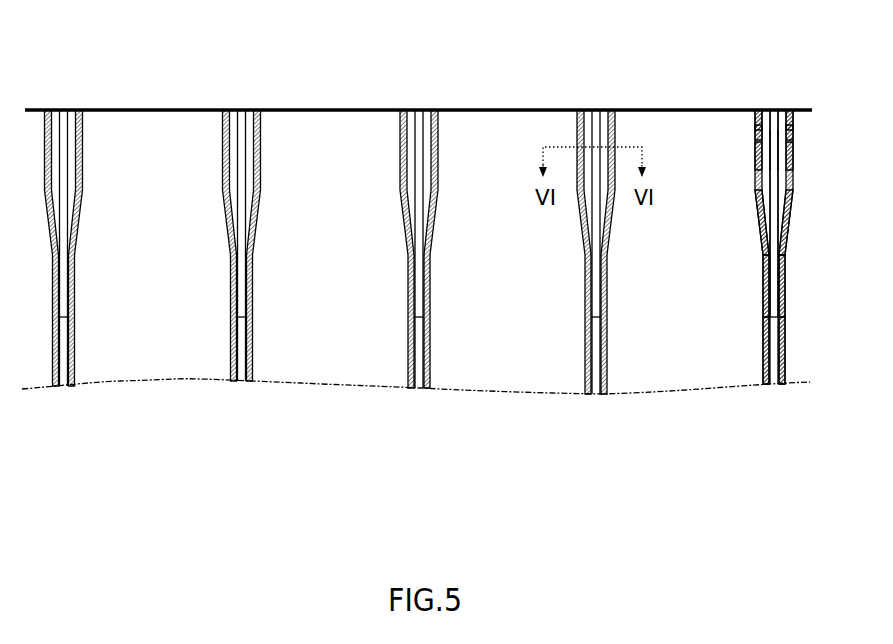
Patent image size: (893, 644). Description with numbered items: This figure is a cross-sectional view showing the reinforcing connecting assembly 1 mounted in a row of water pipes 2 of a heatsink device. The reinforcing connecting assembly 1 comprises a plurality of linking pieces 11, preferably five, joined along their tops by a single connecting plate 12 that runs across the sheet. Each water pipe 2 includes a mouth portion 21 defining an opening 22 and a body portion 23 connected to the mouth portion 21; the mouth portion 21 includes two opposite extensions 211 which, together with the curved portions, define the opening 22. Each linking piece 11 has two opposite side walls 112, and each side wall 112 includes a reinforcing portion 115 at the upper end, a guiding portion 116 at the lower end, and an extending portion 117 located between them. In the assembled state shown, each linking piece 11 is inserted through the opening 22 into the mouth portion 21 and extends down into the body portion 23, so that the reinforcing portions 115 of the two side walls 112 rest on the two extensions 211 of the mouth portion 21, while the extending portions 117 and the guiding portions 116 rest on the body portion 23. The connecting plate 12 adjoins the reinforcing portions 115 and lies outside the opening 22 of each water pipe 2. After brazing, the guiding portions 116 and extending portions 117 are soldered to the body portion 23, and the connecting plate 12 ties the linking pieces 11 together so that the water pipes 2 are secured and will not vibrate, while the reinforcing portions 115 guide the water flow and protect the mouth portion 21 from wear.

The reinforcing connecting assembly 1 is at (418, 64).
The connecting plate 12 is at (526, 108).
The linking piece 11 is at (586, 108).
The side wall 112 is at (757, 121).
The opening 22 is at (777, 109).
The reinforcing portion 115 is at (758, 131).
The mouth portion 21 is at (793, 149).
The extension 211 is at (757, 148).
The extending portion 117 is at (760, 203).
The guiding portion 116 is at (762, 300).
The body portion 23 is at (787, 336).
The water pipe 2 is at (792, 365).